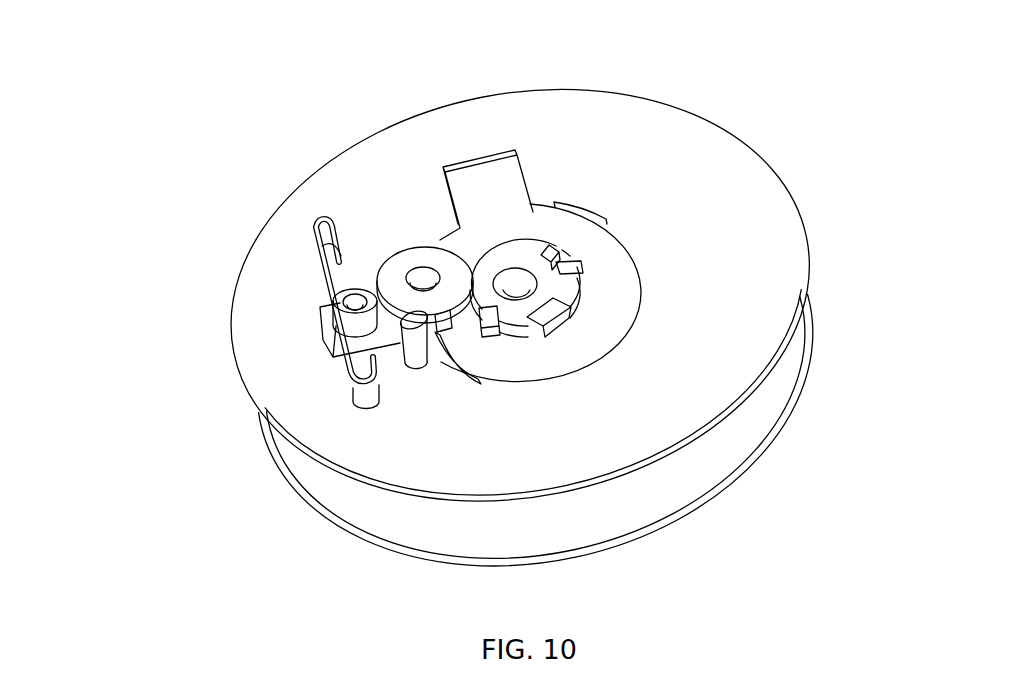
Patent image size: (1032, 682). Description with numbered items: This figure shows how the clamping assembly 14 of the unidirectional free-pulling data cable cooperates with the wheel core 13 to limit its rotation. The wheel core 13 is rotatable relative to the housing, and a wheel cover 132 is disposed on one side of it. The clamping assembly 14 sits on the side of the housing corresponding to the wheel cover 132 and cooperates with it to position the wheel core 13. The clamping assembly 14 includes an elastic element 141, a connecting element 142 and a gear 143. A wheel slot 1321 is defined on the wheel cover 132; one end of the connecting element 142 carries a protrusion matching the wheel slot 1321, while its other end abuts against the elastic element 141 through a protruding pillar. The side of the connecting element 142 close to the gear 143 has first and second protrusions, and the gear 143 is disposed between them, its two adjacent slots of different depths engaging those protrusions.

The wheel core 13 is at (697, 180).
The wheel cover 132 is at (702, 263).
The wheel slot 1321 is at (557, 323).
The clamping assembly 14 is at (249, 282).
The elastic element 141 is at (322, 327).
The connecting element 142 is at (375, 274).
The gear 143 is at (424, 249).